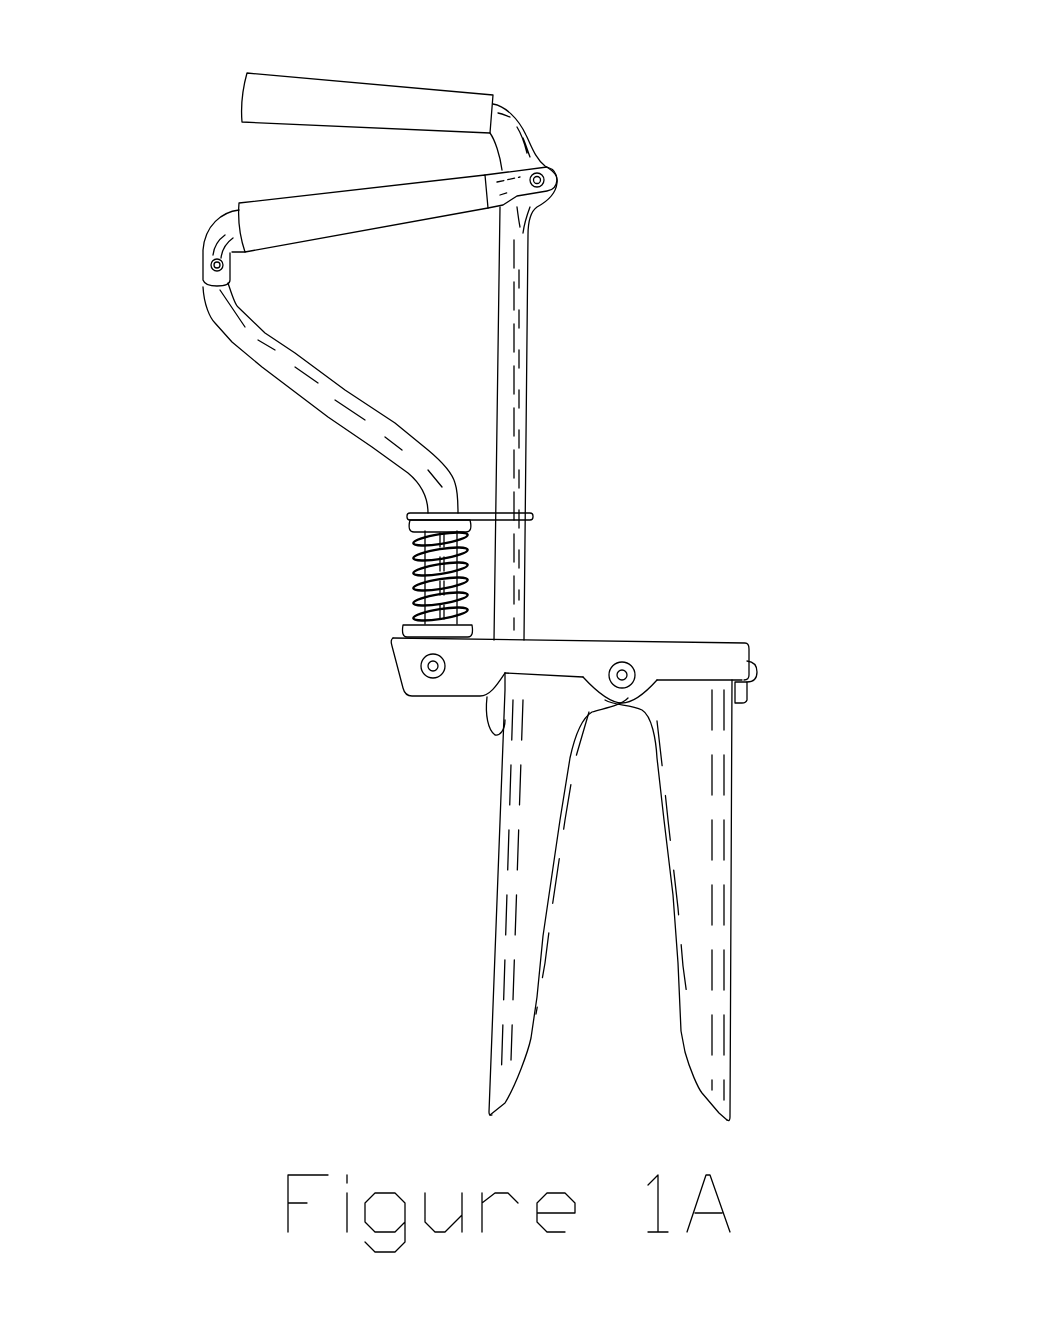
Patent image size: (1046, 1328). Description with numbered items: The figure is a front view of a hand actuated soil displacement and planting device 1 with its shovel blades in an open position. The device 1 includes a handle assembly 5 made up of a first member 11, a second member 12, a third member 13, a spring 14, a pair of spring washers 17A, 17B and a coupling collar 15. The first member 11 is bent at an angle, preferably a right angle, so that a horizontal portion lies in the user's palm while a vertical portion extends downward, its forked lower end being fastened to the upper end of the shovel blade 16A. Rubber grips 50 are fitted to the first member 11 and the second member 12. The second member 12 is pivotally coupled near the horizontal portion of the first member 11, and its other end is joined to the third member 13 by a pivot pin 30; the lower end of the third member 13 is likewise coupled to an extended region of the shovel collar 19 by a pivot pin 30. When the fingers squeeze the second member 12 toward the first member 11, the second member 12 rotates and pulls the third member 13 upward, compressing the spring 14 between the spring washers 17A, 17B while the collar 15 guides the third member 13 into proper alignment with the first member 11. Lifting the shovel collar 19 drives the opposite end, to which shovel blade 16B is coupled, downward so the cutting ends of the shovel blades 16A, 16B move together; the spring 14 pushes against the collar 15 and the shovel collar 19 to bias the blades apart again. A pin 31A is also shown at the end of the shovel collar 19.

The device 1 is at (833, 322).
The handle assembly 5 is at (102, 63).
The rubber grips 50 is at (380, 273).
The pivot pin 30 is at (567, 180).
The first member 11 is at (520, 290).
The second member 12 is at (220, 233).
The third member 13 is at (340, 418).
The spring 14 is at (417, 578).
The coupling collar 15 is at (532, 518).
The spring washer 17A is at (413, 530).
The spring washer 17B is at (403, 631).
The shovel collar 19 is at (430, 687).
The pivot pin 31A is at (755, 671).
The shovel blade 16A is at (537, 908).
The shovel blade 16B is at (707, 920).